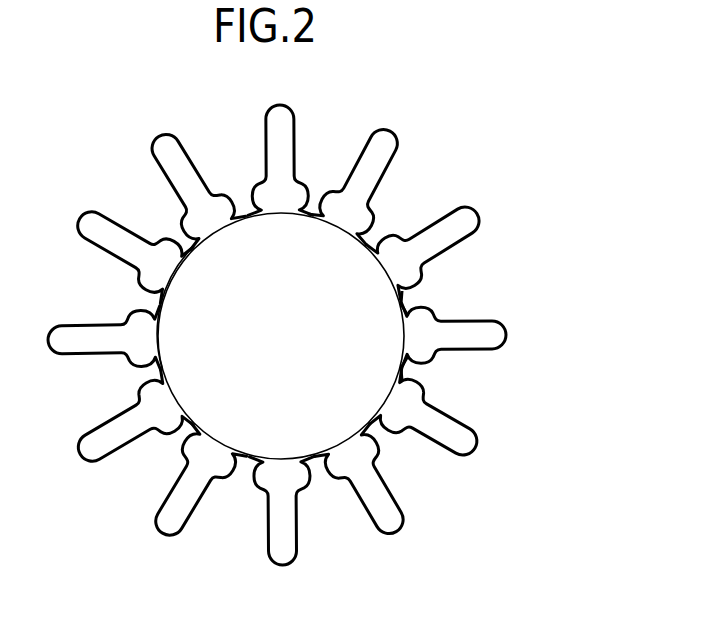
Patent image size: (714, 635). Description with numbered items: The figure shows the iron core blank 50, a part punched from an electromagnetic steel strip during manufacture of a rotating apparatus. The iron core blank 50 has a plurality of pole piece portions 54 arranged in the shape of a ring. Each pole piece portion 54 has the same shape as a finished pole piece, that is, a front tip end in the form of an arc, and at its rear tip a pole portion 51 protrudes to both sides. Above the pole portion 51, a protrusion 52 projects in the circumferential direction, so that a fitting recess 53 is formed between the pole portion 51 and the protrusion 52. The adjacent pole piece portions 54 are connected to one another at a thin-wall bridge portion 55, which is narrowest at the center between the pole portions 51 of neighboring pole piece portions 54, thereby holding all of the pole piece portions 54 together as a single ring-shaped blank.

The iron core blank 50 is at (315, 335).
The pole portion 51 is at (390, 392).
The protrusion 52 is at (419, 292).
The fitting recess 53 is at (413, 380).
The pole piece portion 54 is at (461, 223).
The thin-wall bridge portion 55 is at (162, 368).